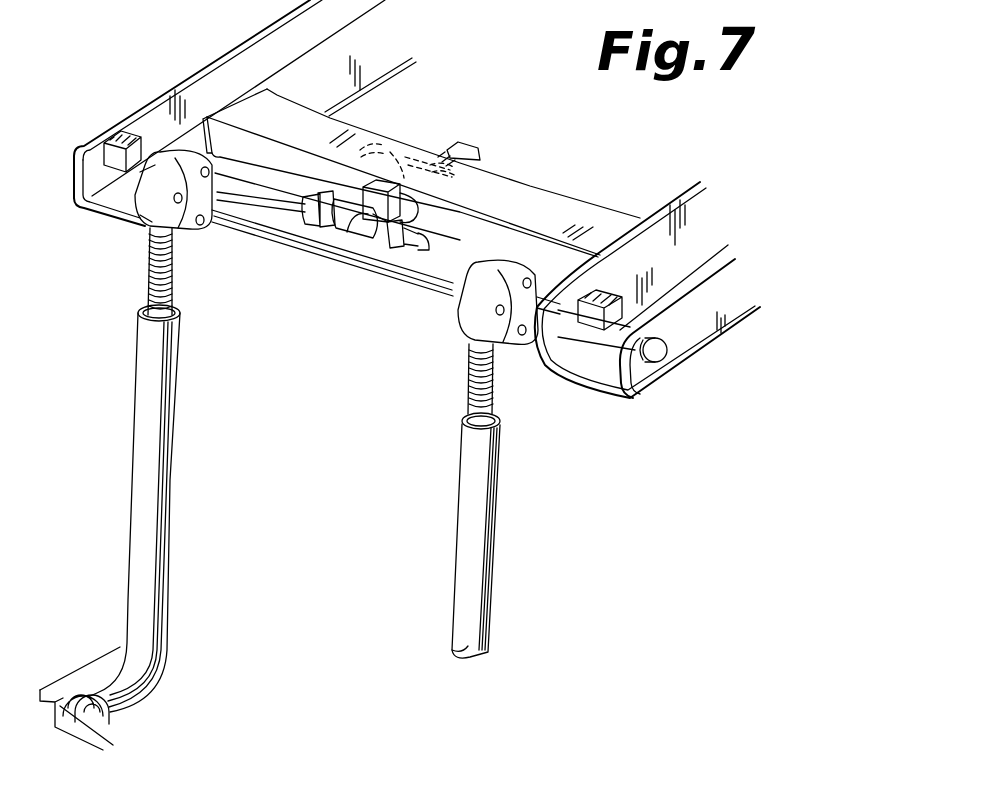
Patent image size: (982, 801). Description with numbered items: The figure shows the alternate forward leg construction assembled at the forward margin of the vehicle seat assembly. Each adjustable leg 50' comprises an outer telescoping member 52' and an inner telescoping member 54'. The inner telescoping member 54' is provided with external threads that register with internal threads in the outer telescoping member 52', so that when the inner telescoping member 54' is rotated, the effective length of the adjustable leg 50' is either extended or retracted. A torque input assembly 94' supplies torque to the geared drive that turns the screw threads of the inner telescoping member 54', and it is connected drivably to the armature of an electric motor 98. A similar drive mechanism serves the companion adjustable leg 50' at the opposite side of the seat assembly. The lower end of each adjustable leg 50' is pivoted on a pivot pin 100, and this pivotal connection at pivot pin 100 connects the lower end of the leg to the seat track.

The adjustable leg 50' is at (351, 508).
The outer telescoping member 52' is at (362, 514).
The inner telescoping member 54' is at (366, 327).
The torque input assembly 94' is at (386, 287).
The electric motor 98 is at (427, 212).
The pivot pin 100 is at (127, 710).